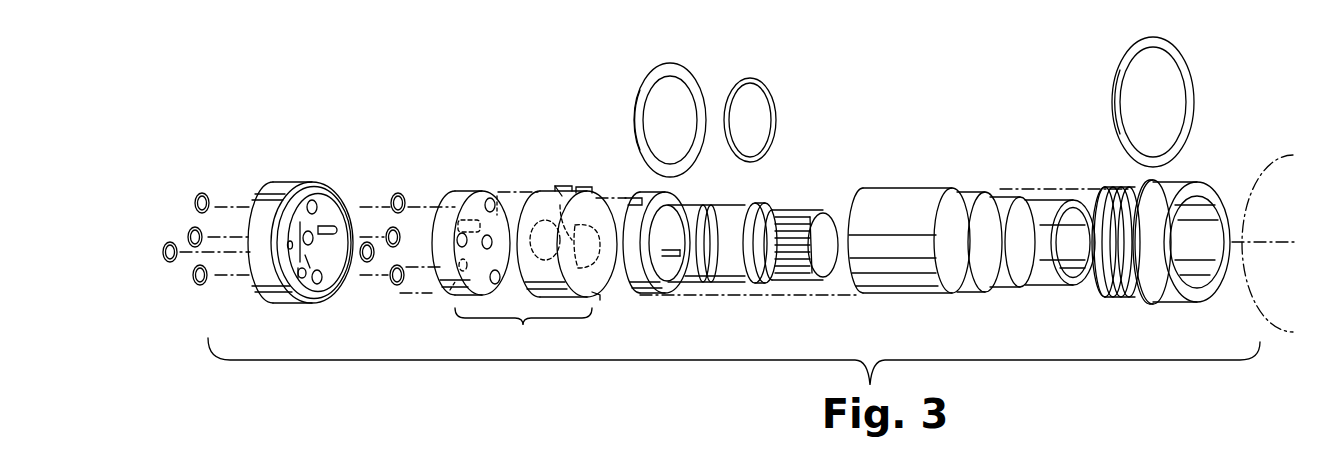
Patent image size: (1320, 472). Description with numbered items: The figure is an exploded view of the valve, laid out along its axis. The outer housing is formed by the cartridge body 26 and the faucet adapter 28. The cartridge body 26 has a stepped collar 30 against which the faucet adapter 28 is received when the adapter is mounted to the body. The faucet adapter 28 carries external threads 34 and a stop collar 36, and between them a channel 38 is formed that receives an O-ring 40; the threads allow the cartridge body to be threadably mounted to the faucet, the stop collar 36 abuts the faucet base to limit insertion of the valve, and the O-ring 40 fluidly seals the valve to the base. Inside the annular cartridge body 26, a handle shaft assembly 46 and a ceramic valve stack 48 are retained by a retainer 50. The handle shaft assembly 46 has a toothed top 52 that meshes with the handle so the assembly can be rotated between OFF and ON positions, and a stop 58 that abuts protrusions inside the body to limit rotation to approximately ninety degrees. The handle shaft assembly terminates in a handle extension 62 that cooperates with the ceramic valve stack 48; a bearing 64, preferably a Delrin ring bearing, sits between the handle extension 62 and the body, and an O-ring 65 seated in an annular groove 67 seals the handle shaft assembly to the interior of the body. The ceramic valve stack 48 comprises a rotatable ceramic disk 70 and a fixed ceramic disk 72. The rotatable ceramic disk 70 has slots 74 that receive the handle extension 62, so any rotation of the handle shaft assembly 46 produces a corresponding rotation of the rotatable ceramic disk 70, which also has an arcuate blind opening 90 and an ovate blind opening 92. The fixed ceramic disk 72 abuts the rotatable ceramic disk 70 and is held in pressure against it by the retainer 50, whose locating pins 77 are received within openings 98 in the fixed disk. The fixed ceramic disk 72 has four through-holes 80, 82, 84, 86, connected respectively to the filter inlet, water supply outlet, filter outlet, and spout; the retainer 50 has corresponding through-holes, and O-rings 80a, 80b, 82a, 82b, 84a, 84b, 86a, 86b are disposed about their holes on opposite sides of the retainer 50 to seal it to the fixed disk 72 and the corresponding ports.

The cartridge body 26 is at (914, 183).
The faucet adapter 28 is at (1157, 236).
The stepped collar 30 is at (985, 192).
The external threads 34 is at (1125, 185).
The stop collar 36 is at (1152, 301).
The channel 38 is at (1110, 294).
The O-ring 40 is at (1112, 93).
The handle shaft assembly 46 is at (805, 240).
The ceramic valve stack 48 is at (517, 216).
The retainer 50 is at (307, 178).
The toothed top 52 is at (797, 282).
The stop 58 is at (737, 239).
The handle extension 62 is at (647, 179).
The bearing 64 is at (696, 77).
The O-ring 65 is at (770, 86).
The annular groove 67 is at (718, 209).
The rotatable ceramic disk 70 is at (545, 190).
The fixed ceramic disk 72 is at (455, 194).
The slots 74 is at (560, 187).
The locating pins 77 is at (329, 226).
The through-hole 80 is at (482, 244).
The O-ring 80a is at (190, 229).
The O-ring 80b is at (390, 227).
The through-hole 82 is at (497, 284).
The O-ring 82a is at (200, 286).
The O-ring 82b is at (397, 286).
The through-hole 84 is at (458, 235).
The O-ring 84a is at (200, 193).
The O-ring 84b is at (399, 192).
The through-hole 86 is at (490, 197).
The O-ring 86a is at (166, 262).
The O-ring 86b is at (367, 263).
The arcuate blind opening 90 is at (605, 196).
The ovate blind opening 92 is at (527, 192).
The openings 98 is at (497, 196).